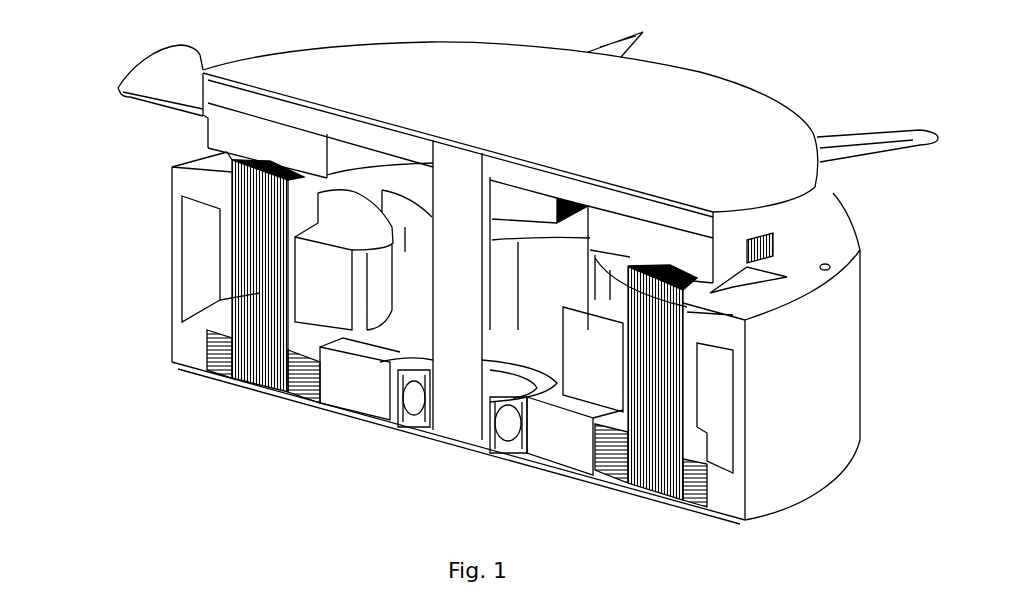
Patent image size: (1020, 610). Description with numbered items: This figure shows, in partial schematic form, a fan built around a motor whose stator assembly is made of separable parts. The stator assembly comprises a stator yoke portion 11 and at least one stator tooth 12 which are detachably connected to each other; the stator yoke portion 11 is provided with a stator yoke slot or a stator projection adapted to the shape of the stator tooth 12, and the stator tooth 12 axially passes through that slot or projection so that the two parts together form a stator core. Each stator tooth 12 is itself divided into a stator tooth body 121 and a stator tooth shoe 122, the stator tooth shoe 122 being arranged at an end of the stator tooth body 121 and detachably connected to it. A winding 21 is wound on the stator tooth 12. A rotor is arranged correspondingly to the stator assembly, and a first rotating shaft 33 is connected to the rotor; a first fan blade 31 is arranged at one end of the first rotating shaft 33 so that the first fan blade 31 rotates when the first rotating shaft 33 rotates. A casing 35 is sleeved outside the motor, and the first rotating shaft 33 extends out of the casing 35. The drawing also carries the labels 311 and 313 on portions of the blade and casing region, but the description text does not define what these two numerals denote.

The stator yoke portion 11 is at (303, 377).
The stator tooth 12 is at (357, 330).
The stator tooth body 121 is at (302, 218).
The stator tooth shoe 122 is at (320, 182).
The winding 21 is at (320, 270).
The first fan blade 31 is at (747, 217).
The first rotating shaft 33 is at (455, 255).
The casing 35 is at (827, 383).
The mounting slot 311 is at (707, 462).
The winding 313 is at (680, 497).